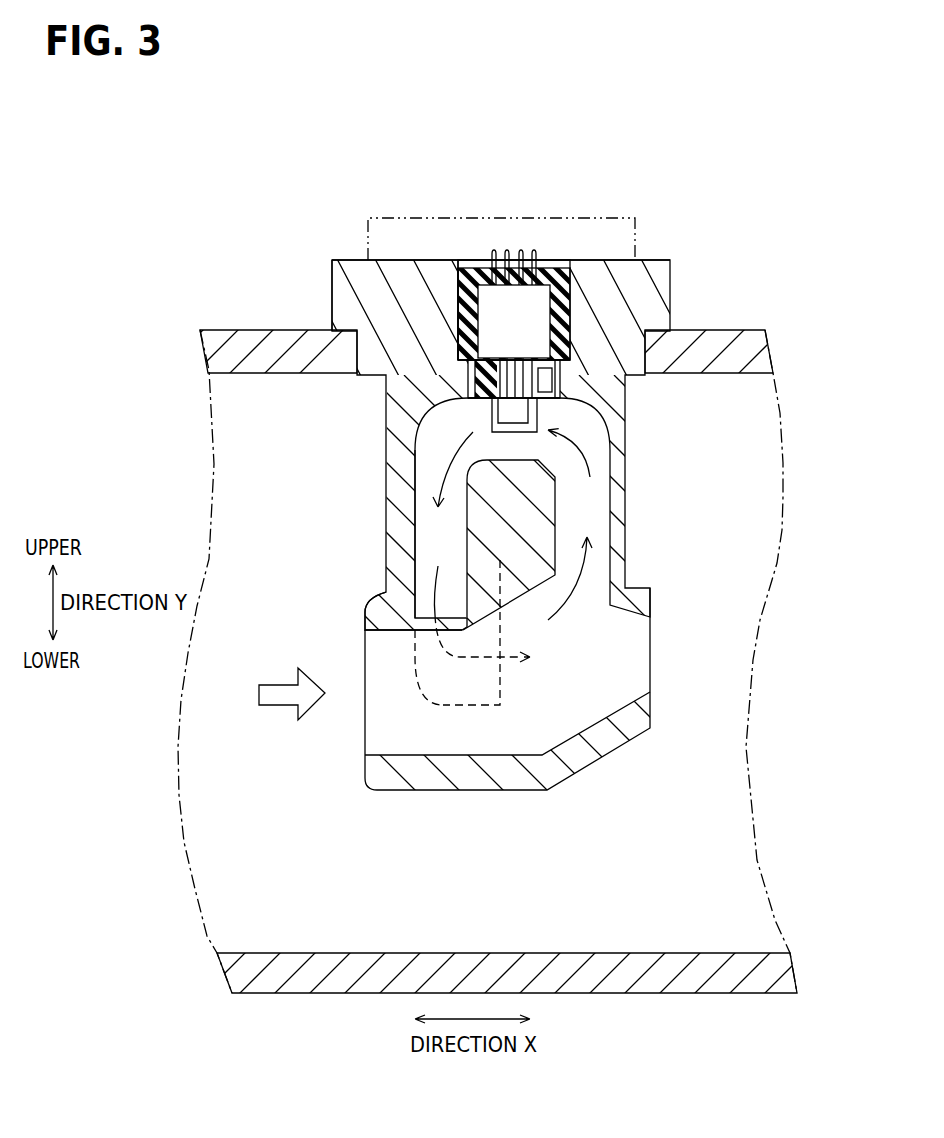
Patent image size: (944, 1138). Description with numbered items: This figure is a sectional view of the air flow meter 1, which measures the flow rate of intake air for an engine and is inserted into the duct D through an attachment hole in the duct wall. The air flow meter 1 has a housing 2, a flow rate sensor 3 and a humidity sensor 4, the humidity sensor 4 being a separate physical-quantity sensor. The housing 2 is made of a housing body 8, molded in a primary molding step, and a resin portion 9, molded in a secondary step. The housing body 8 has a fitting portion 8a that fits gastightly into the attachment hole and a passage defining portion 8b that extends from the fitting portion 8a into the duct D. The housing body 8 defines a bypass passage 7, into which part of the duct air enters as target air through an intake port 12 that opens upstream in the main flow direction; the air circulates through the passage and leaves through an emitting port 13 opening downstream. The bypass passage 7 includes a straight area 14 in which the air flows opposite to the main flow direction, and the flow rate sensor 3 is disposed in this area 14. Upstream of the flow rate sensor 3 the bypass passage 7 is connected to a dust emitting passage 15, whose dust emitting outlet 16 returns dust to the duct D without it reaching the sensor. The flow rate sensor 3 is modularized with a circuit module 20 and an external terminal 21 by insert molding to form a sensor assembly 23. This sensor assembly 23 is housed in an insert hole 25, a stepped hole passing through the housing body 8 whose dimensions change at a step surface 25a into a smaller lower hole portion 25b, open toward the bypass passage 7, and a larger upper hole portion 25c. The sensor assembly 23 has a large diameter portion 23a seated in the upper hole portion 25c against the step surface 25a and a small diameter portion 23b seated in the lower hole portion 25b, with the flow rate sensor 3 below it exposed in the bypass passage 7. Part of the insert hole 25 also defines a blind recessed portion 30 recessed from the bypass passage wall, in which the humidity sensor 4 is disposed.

The air flow meter 1 is at (783, 126).
The housing 2 is at (666, 248).
The flow rate sensor 3 is at (458, 360).
The humidity sensor 4 is at (545, 418).
The bypass passage 7 is at (593, 485).
The housing body 8 is at (370, 605).
The fitting portion 8a is at (330, 307).
The passage defining portion 8b is at (393, 552).
The resin portion 9 is at (480, 232).
The intake port 12 is at (363, 702).
The emitting port 13 is at (500, 677).
The area 14 is at (548, 422).
The dust emitting passage 15 is at (628, 680).
The dust emitting outlet 16 is at (650, 663).
The circuit module 20 is at (580, 296).
The external terminal 21 is at (537, 300).
The sensor assembly 23 is at (571, 312).
The large diameter portion 23a is at (460, 285).
The small diameter portion 23b is at (466, 398).
The insert hole 25 is at (572, 326).
The step surface 25a is at (462, 358).
The lower hole portion 25b is at (470, 385).
The upper hole portion 25c is at (465, 297).
The recessed portion 30 is at (556, 392).
The duct D is at (215, 345).